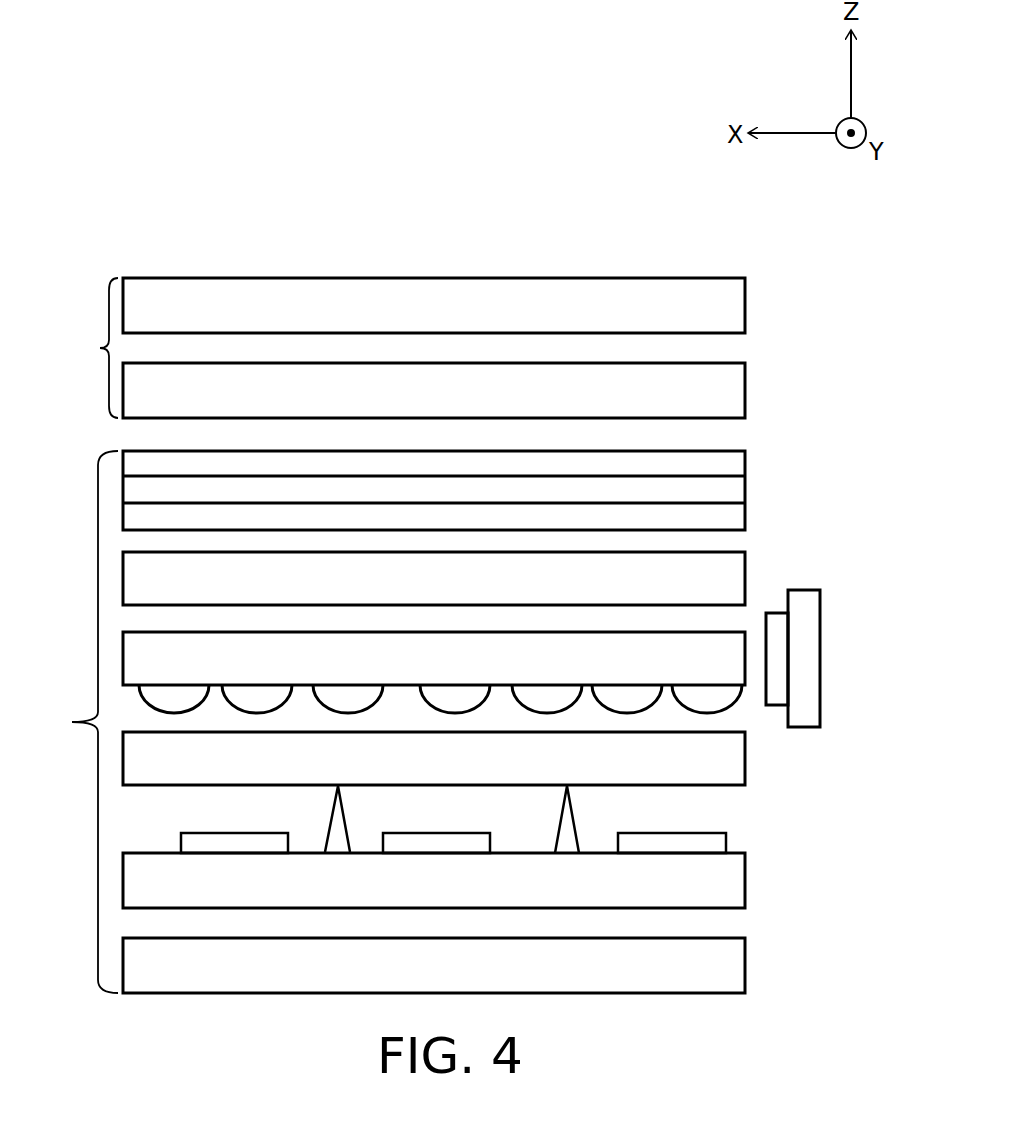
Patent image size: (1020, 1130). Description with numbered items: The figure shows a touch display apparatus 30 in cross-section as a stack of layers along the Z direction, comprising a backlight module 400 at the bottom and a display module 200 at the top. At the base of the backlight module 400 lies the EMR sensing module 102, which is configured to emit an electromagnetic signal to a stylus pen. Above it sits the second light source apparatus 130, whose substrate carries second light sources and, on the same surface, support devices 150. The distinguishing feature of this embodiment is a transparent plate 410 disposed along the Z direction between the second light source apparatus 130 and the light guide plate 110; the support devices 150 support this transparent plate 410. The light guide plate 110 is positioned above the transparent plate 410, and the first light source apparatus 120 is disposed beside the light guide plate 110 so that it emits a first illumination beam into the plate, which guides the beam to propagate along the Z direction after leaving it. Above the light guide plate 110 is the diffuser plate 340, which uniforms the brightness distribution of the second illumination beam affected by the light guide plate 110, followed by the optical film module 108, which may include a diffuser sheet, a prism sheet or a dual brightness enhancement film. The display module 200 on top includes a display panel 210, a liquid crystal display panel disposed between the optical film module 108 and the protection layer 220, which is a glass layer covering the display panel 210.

The touch display apparatus 30 is at (776, 250).
The display module 200 is at (87, 348).
The protection layer 220 is at (745, 303).
The display panel 210 is at (745, 390).
The backlight module 400 is at (72, 722).
The optical film module 108 is at (745, 490).
The diffuser plate 340 is at (747, 565).
The light guide plate 110 is at (740, 632).
The first light source apparatus 120 is at (822, 630).
The transparent plate 410 is at (747, 757).
The support device 150 is at (330, 818).
The second light source apparatus 130 is at (745, 853).
The EMR sensing module 102 is at (745, 963).